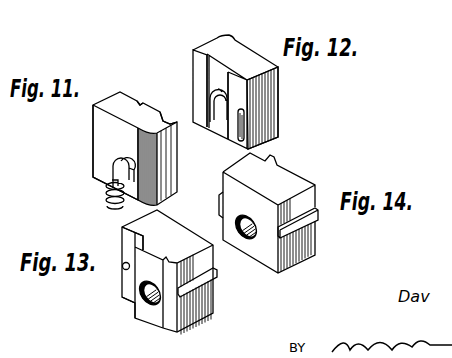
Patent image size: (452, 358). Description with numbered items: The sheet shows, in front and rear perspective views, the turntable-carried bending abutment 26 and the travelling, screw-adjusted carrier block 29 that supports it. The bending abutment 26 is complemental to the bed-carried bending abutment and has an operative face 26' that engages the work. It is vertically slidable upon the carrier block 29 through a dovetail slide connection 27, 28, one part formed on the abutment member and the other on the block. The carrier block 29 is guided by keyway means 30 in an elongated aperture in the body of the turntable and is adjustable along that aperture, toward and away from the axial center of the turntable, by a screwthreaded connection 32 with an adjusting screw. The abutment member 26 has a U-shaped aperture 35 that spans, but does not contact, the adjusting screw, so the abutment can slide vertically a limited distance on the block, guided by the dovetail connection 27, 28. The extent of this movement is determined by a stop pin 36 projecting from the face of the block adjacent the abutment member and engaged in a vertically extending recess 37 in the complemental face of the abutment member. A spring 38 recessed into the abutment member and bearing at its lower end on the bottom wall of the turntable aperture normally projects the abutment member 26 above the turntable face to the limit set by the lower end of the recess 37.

In FIG. 11, the bending abutment 26 is at (135, 135).
In FIG. 12, the bending abutment 26 is at (229, 81).
In FIG. 11, the operative face 26' is at (93, 152).
In FIG. 12, the operative face 26' is at (266, 82).
In FIG. 11, the dovetail slide connection 27 is at (164, 118).
In FIG. 12, the dovetail slide connection 27 is at (206, 67).
In FIG. 11, the U-shaped aperture 35 is at (113, 170).
In FIG. 12, the U-shaped aperture 35 is at (218, 119).
In FIG. 12, the vertically extending recess 37 is at (240, 135).
In FIG. 11, the spring 38 is at (107, 201).
In FIG. 13, the dovetail slide connection 28 is at (136, 314).
In FIG. 14, the dovetail slide connection 28 is at (294, 173).
In FIG. 13, the carrier block 29 is at (217, 302).
In FIG. 14, the carrier block 29 is at (288, 271).
In FIG. 13, the keyway means 30 is at (122, 250).
In FIG. 14, the keyway means 30 is at (219, 200).
In FIG. 13, the screwthreaded connection 32 is at (142, 298).
In FIG. 14, the screwthreaded connection 32 is at (247, 241).
In FIG. 13, the stop pin 36 is at (122, 268).